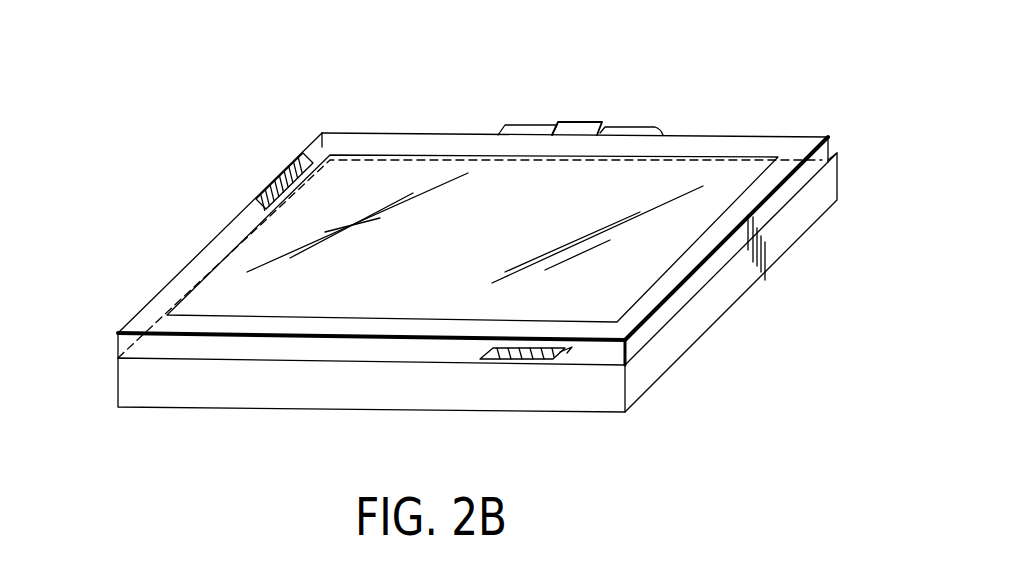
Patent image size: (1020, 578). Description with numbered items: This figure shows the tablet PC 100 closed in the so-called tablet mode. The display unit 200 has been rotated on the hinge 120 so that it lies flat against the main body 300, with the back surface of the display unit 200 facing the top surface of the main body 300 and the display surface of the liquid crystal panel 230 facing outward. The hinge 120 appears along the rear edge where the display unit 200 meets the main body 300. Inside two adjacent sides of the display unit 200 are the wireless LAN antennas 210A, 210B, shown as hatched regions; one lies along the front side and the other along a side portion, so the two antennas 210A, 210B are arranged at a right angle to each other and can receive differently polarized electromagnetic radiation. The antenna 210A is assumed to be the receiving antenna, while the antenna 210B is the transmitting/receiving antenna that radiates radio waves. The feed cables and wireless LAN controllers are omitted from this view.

The tablet PC 100 is at (806, 107).
The hinge 120 is at (580, 125).
The display unit 200 is at (184, 242).
The antenna 210A is at (519, 362).
The antenna 210B is at (290, 167).
The liquid crystal panel 230 is at (633, 275).
The main body 300 is at (154, 430).